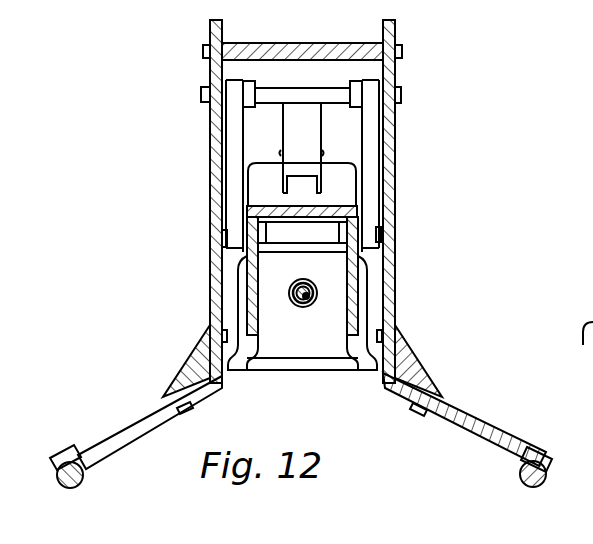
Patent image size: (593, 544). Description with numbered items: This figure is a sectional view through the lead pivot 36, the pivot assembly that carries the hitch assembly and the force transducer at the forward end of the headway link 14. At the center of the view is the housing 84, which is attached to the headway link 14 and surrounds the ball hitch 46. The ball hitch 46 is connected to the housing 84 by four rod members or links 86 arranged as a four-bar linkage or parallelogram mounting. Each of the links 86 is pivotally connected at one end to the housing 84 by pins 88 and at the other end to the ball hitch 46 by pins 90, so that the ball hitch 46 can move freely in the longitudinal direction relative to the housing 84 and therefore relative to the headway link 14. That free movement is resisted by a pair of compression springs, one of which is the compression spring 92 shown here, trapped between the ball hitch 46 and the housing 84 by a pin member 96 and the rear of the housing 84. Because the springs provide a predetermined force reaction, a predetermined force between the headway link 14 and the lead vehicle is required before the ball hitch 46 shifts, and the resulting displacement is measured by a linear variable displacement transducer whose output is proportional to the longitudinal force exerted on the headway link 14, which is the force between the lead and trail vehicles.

The headway link 14 is at (512, 477).
The lead pivot 36 is at (201, 114).
The ball hitch 46 is at (255, 278).
The housing 84 is at (392, 137).
The rod members or links 86 is at (232, 170).
The pins 88 is at (399, 92).
The pins 90 is at (325, 228).
The compression spring 92 is at (314, 293).
The pin member 96 is at (306, 298).